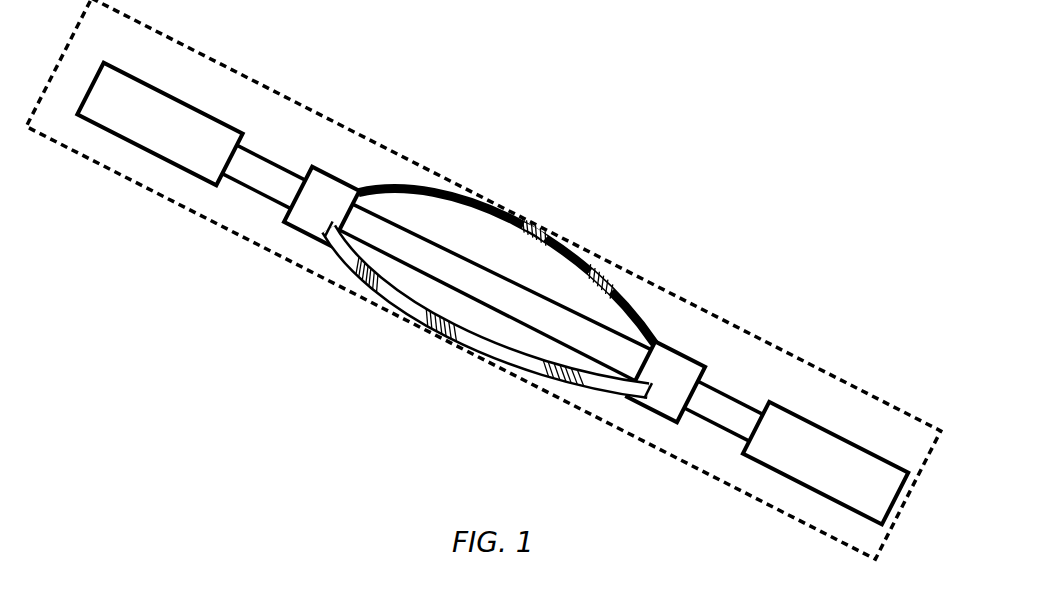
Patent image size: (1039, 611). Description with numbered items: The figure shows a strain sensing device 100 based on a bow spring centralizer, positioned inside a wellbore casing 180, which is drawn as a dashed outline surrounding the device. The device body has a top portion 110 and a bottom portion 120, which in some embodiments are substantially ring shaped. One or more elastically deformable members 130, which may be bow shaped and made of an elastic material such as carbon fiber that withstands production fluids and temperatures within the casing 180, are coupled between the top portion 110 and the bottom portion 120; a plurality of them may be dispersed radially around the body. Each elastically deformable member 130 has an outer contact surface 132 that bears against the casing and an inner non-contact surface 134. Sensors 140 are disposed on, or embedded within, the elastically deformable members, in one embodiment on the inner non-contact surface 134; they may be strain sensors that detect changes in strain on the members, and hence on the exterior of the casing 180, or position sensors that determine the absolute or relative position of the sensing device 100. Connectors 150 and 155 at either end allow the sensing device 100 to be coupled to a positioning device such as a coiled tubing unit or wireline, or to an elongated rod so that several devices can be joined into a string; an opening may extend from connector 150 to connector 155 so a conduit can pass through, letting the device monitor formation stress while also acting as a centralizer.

The strain sensing device 100 is at (697, 229).
The top portion 110 is at (308, 212).
The bottom portion 120 is at (663, 403).
The elastically deformable member 130 is at (423, 183).
The outer contact surface 132 is at (410, 310).
The inner non-contact surface 134 is at (567, 248).
The sensor 140 is at (540, 223).
The connector 150 is at (185, 125).
The connector 155 is at (817, 445).
The casing 180 is at (282, 95).